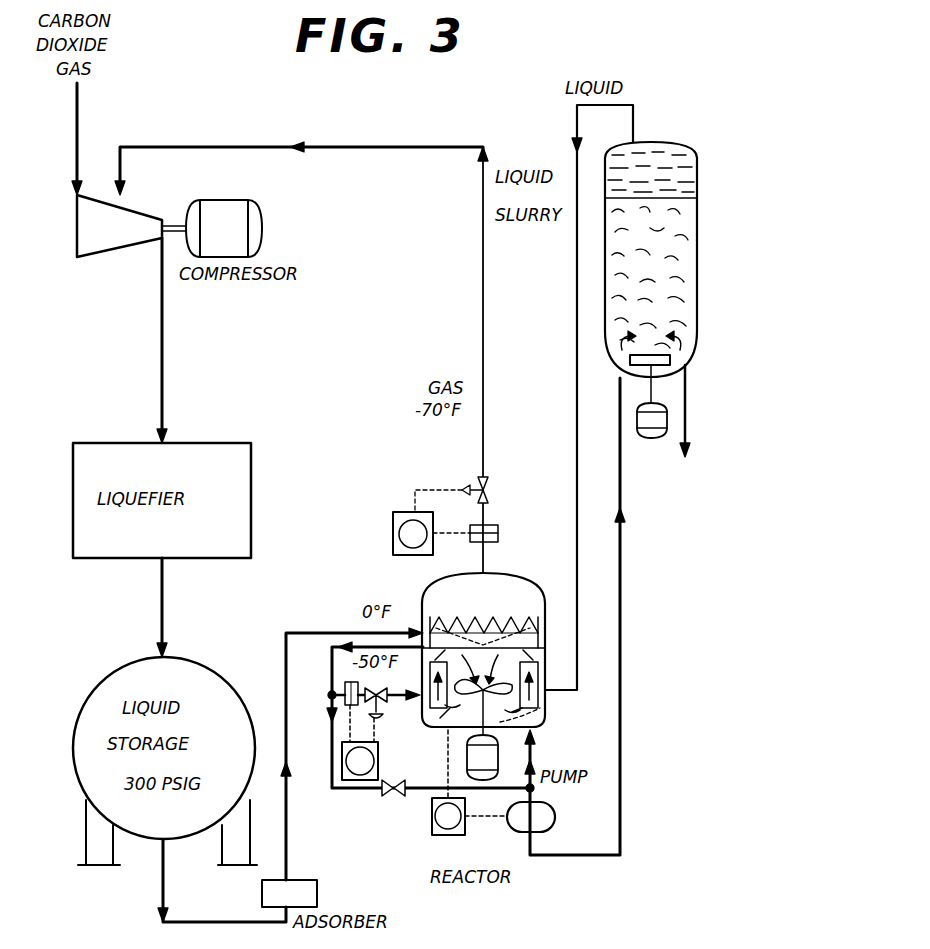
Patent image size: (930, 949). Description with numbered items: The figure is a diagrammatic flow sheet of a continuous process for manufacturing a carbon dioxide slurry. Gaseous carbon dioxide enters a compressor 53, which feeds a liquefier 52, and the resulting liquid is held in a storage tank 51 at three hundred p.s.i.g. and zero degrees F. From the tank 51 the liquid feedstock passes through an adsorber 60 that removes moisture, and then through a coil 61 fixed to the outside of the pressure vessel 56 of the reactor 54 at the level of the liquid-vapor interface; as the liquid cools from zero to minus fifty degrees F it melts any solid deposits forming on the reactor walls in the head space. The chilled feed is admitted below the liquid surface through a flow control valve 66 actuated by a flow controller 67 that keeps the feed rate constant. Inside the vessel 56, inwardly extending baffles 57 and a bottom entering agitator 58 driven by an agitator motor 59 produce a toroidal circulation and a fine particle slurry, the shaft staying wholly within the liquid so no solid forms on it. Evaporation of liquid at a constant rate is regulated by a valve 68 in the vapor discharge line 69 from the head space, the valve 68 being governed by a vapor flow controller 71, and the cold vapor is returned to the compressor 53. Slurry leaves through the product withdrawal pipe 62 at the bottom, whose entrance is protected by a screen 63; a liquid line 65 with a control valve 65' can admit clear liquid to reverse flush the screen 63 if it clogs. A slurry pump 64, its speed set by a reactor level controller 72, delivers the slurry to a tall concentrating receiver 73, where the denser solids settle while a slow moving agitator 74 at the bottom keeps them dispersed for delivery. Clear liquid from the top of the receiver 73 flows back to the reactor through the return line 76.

The storage tank 51 is at (75, 725).
The liquefier 52 is at (73, 488).
The compressor 53 is at (85, 235).
The reactor 54 is at (435, 585).
The pressure vessel 56 is at (530, 605).
The baffles 57 is at (383, 716).
The agitator 58 is at (547, 697).
The agitator motor 59 is at (488, 758).
The adsorber 60 is at (300, 888).
The coil 61 is at (515, 617).
The product withdrawal pipe 62 is at (535, 750).
The screen 63 is at (541, 722).
The slurry pump 64 is at (557, 822).
The liquid line 65 is at (414, 717).
The control valve 65' is at (384, 809).
The flow control valve 66 is at (380, 704).
The flow controller 67 is at (378, 760).
The valve 68 is at (490, 487).
The vapor discharge line 69 is at (486, 412).
The vapor flow controller 71 is at (393, 546).
The reactor level controller 72 is at (433, 845).
The concentrating receiver 73 is at (605, 172).
The agitator 74 is at (640, 365).
The return line 76 is at (577, 462).